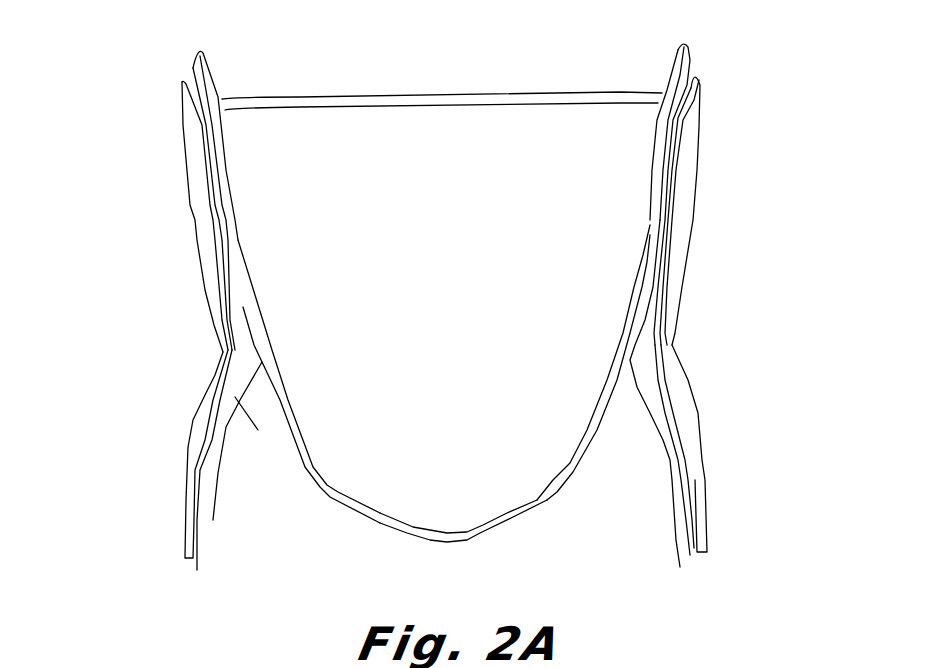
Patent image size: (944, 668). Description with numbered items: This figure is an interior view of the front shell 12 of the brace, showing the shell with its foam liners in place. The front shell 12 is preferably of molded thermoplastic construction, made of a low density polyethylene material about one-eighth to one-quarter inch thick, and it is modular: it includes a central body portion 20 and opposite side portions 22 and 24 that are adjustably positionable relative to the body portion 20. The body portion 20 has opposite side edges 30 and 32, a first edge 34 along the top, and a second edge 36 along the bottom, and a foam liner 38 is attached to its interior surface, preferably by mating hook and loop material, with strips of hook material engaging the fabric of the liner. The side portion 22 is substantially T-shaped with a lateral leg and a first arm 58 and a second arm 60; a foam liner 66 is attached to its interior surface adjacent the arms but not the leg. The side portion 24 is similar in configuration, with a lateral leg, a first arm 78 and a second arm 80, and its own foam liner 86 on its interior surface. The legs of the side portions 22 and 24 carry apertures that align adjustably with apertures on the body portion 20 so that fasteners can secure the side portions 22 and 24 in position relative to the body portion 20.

The front shell 12 is at (495, 68).
The central body portion 20 is at (285, 145).
The side portion 22 is at (675, 117).
The side portion 24 is at (198, 163).
The side edge 30 is at (598, 438).
The side edge 32 is at (303, 470).
The first edge 34 is at (541, 93).
The second edge 36 is at (497, 535).
The foam liner 38 is at (445, 277).
The first arm 58 is at (700, 80).
The second arm 60 is at (706, 500).
The foam liner 66 is at (634, 353).
The first arm 78 is at (180, 97).
The second arm 80 is at (188, 452).
The foam liner 86 is at (238, 400).